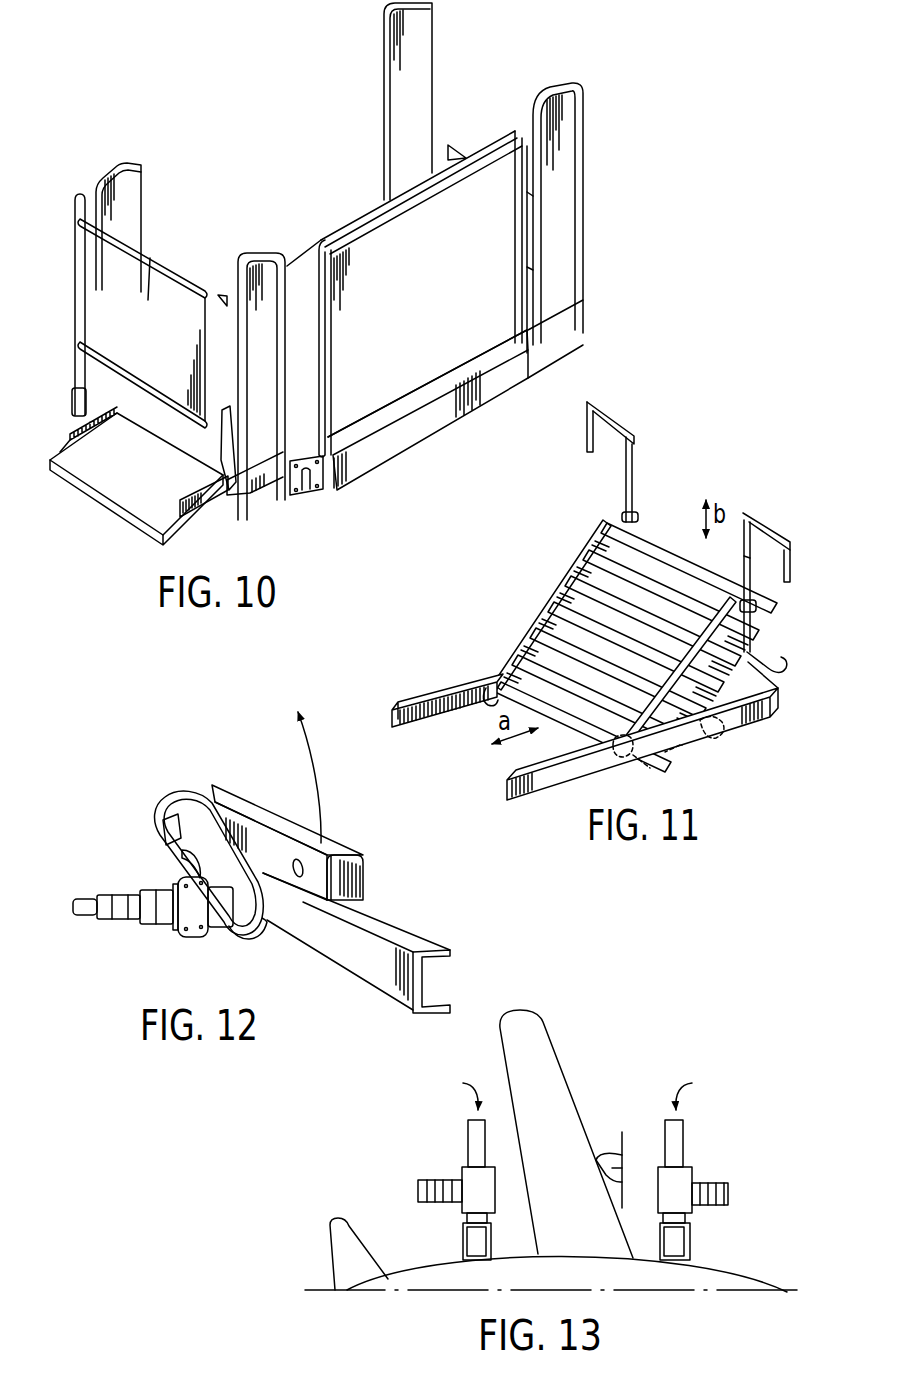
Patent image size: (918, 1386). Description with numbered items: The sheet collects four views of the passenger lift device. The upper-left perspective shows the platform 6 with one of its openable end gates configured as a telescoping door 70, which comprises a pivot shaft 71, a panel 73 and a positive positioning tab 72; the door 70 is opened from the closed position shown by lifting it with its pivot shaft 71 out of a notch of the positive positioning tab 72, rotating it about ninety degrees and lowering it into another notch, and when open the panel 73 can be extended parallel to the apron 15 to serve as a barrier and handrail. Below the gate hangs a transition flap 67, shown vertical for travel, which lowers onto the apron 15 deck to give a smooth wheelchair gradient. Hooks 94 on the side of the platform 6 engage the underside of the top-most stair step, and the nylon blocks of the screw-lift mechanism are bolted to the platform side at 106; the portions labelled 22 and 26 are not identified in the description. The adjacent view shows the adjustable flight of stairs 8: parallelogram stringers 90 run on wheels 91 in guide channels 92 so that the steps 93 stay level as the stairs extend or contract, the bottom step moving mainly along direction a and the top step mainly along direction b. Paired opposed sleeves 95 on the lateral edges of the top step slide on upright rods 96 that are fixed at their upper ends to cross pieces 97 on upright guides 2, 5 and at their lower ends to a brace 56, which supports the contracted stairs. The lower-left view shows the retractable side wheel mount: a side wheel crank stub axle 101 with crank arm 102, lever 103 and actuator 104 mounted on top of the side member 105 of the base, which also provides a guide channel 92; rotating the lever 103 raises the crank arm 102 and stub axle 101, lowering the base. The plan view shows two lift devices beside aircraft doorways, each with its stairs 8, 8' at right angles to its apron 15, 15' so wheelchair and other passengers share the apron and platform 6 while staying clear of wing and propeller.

In FIG. 10, the carriage 22 is at (336, 104).
In FIG. 10, the pivot shaft 71 is at (76, 199).
In FIG. 10, the positive positioning tab 72 is at (68, 385).
In FIG. 10, the telescoping door 70 is at (152, 246).
In FIG. 10, the panel 73 is at (170, 300).
In FIG. 10, the hooks 94 is at (227, 287).
In FIG. 10, the nylon block attachment point 106 is at (536, 362).
In FIG. 10, the platform 26 is at (112, 483).
In FIG. 10, the apron 15 is at (204, 519).
In FIG. 13, the apron 15 is at (572, 1179).
In FIG. 10, the transition flap 67 is at (227, 505).
In FIG. 11, the level steps 93 is at (635, 646).
In FIG. 11, the parallelogram stringers 90 is at (628, 520).
In FIG. 11, the cross pieces 97 is at (612, 413).
In FIG. 11, the upright guide 5 is at (587, 442).
In FIG. 11, the upright guide 2 is at (790, 552).
In FIG. 11, the upright rods 96 is at (808, 578).
In FIG. 11, the paired opposed sleeves 95 is at (637, 516).
In FIG. 11, the brace 56 is at (782, 666).
In FIG. 11, the guide channels 92 is at (503, 776).
In FIG. 11, the wheels 91 is at (488, 700).
In FIG. 12, the side wheel crank stub axle 101 is at (222, 930).
In FIG. 12, the crank arm 102 is at (158, 850).
In FIG. 12, the lever 103 is at (347, 843).
In FIG. 12, the actuator 104 is at (383, 877).
In FIG. 12, the side member 105 is at (380, 968).
In FIG. 13, the flight of stairs 8 is at (432, 1167).
In FIG. 13, the cross tube 8' is at (719, 1169).
In FIG. 13, the platform 6 is at (486, 1207).
In FIG. 13, the tube 15' is at (697, 1236).